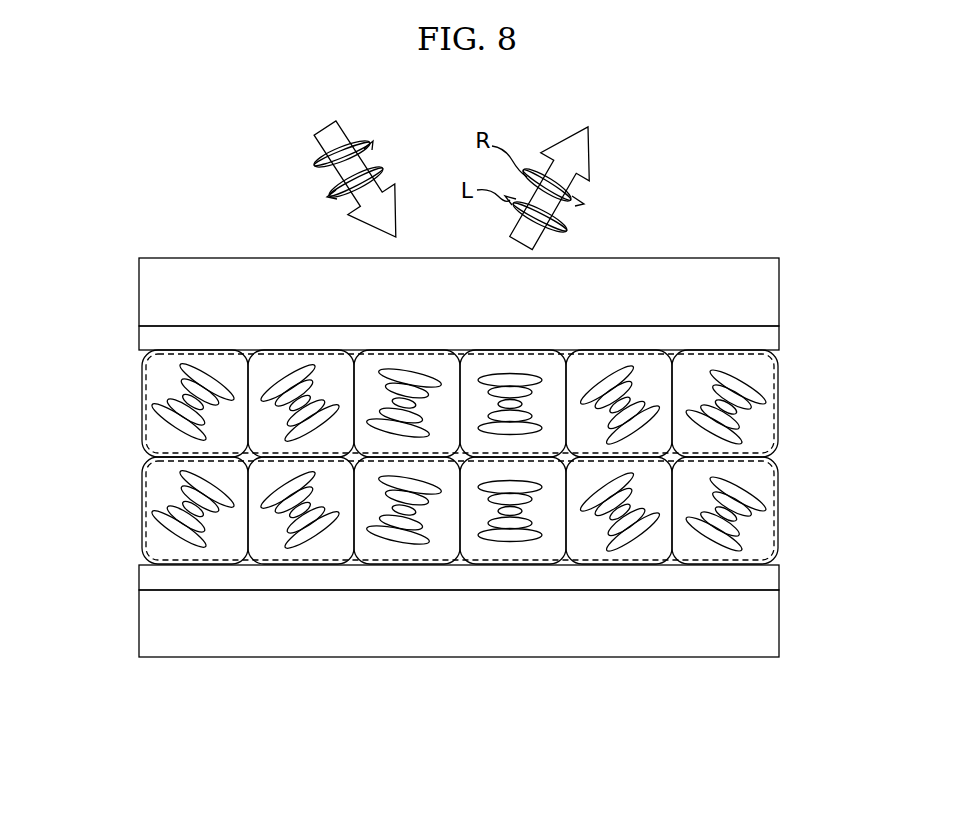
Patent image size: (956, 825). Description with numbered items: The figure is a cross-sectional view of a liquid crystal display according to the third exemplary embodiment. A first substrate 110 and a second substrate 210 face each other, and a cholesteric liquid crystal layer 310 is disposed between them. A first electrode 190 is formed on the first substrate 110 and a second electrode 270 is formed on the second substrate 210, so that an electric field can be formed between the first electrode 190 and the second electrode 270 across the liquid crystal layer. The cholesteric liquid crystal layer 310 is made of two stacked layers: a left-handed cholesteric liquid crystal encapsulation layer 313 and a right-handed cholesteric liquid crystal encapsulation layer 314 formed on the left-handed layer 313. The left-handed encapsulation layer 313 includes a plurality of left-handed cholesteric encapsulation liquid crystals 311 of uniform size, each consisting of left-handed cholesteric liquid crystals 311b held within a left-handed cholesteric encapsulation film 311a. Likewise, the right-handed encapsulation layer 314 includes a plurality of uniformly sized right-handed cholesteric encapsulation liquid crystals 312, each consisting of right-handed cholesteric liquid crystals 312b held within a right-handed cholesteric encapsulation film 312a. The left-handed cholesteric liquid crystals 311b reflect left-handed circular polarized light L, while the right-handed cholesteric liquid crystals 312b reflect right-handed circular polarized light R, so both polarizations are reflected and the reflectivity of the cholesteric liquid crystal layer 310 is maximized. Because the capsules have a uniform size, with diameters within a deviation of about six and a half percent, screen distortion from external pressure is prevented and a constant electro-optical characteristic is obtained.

The first substrate 110 is at (150, 625).
The first electrode 190 is at (150, 575).
The second substrate 210 is at (150, 290).
The second electrode 270 is at (150, 337).
The cholesteric liquid crystal layer 310 is at (128, 456).
The left-handed cholesteric encapsulation liquid crystal 311 is at (787, 200).
The left-handed cholesteric encapsulation film 311a is at (728, 350).
The left-handed cholesteric liquid crystal 311b is at (717, 377).
The right-handed cholesteric encapsulation liquid crystal 312 is at (787, 719).
The right-handed cholesteric encapsulation film 312a is at (728, 566).
The right-handed cholesteric liquid crystal 312b is at (716, 543).
The left-handed cholesteric liquid crystal encapsulation layer 313 is at (780, 407).
The right-handed cholesteric liquid crystal encapsulation layer 314 is at (776, 527).